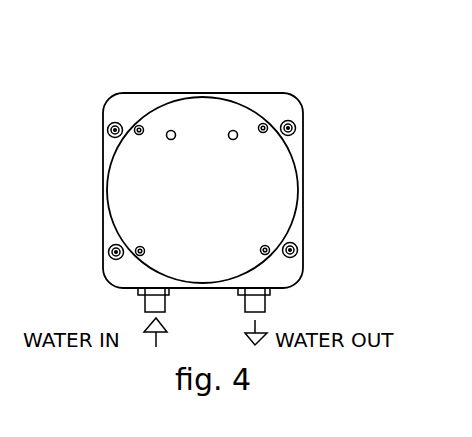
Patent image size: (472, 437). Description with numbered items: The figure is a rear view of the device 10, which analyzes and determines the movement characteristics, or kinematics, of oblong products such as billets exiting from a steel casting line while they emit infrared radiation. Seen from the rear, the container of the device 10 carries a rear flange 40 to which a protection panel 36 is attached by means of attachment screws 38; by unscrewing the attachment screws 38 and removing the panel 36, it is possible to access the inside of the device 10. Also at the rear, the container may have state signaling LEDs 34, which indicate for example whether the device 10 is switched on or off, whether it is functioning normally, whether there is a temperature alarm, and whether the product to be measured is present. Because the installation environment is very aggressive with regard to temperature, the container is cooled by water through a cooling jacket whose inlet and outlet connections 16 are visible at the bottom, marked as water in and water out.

The device 10 is at (152, 72).
The connections of the cooling jacket 16 is at (152, 303).
The state signaling LEDs 34 is at (233, 130).
The protection panel 36 is at (272, 183).
The attachment screws 38 is at (140, 250).
The rear flange 40 is at (283, 103).